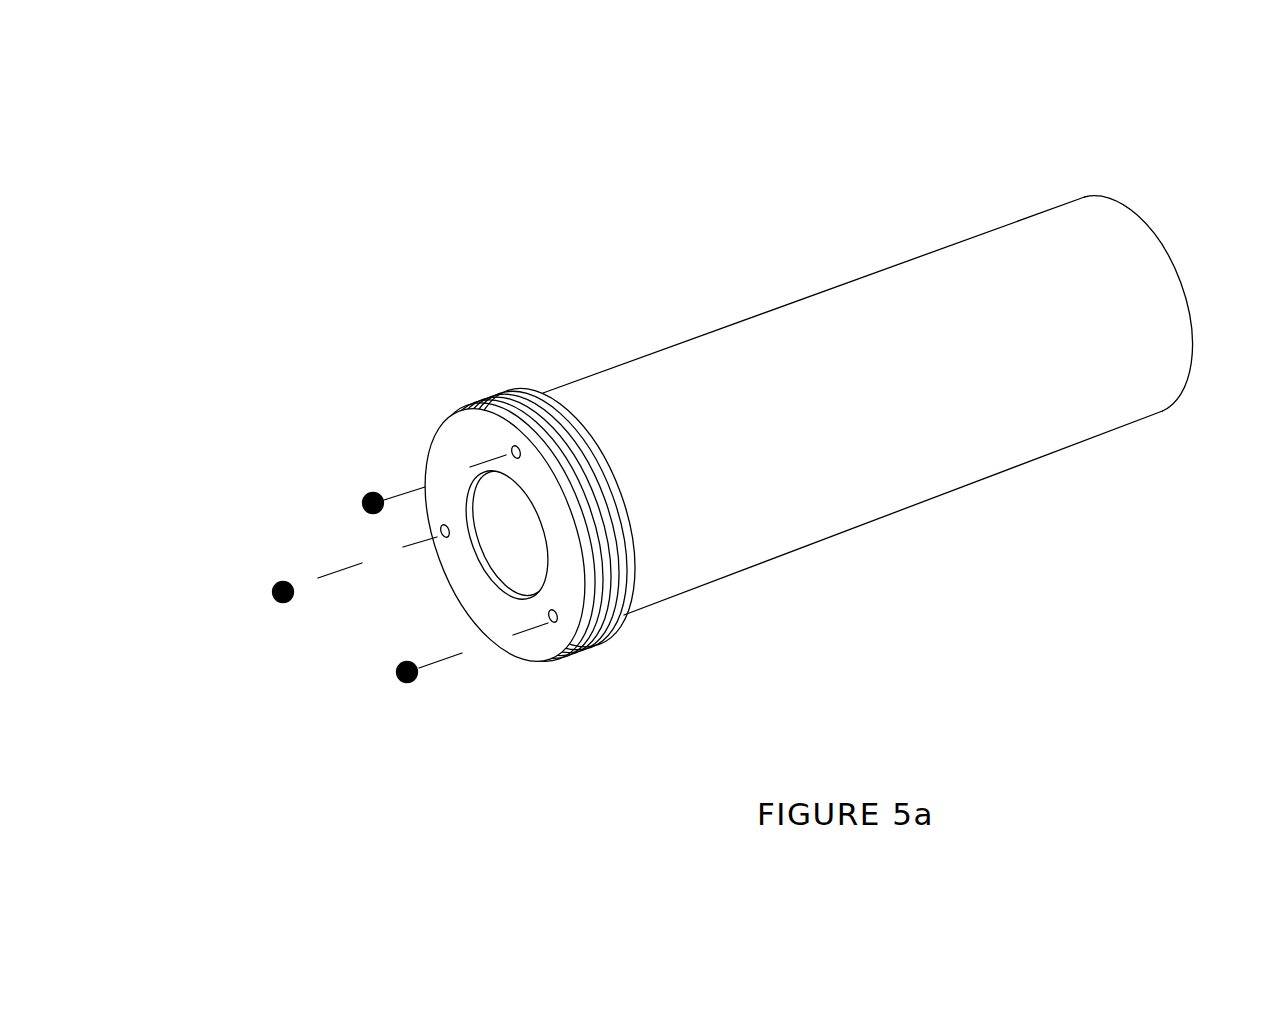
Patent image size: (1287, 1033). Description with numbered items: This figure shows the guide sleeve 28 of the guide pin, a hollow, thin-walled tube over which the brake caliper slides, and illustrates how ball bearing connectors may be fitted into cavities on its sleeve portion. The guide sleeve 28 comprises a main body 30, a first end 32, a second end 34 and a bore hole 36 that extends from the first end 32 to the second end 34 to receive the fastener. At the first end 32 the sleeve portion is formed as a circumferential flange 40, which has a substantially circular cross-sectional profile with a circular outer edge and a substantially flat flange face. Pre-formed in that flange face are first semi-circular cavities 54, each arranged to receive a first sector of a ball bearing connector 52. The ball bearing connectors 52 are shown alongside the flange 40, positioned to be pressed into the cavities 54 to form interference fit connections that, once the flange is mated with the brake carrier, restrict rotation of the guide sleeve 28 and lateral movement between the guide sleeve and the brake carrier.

The guide sleeve 28 is at (690, 435).
The main body 30 is at (892, 405).
The first end 32 is at (598, 643).
The second end 34 is at (1163, 403).
The bore hole 36 is at (507, 568).
The circumferential flange 40 is at (488, 403).
The ball bearing connector 52 is at (360, 505).
The first semi-circular cavity 54 is at (516, 448).